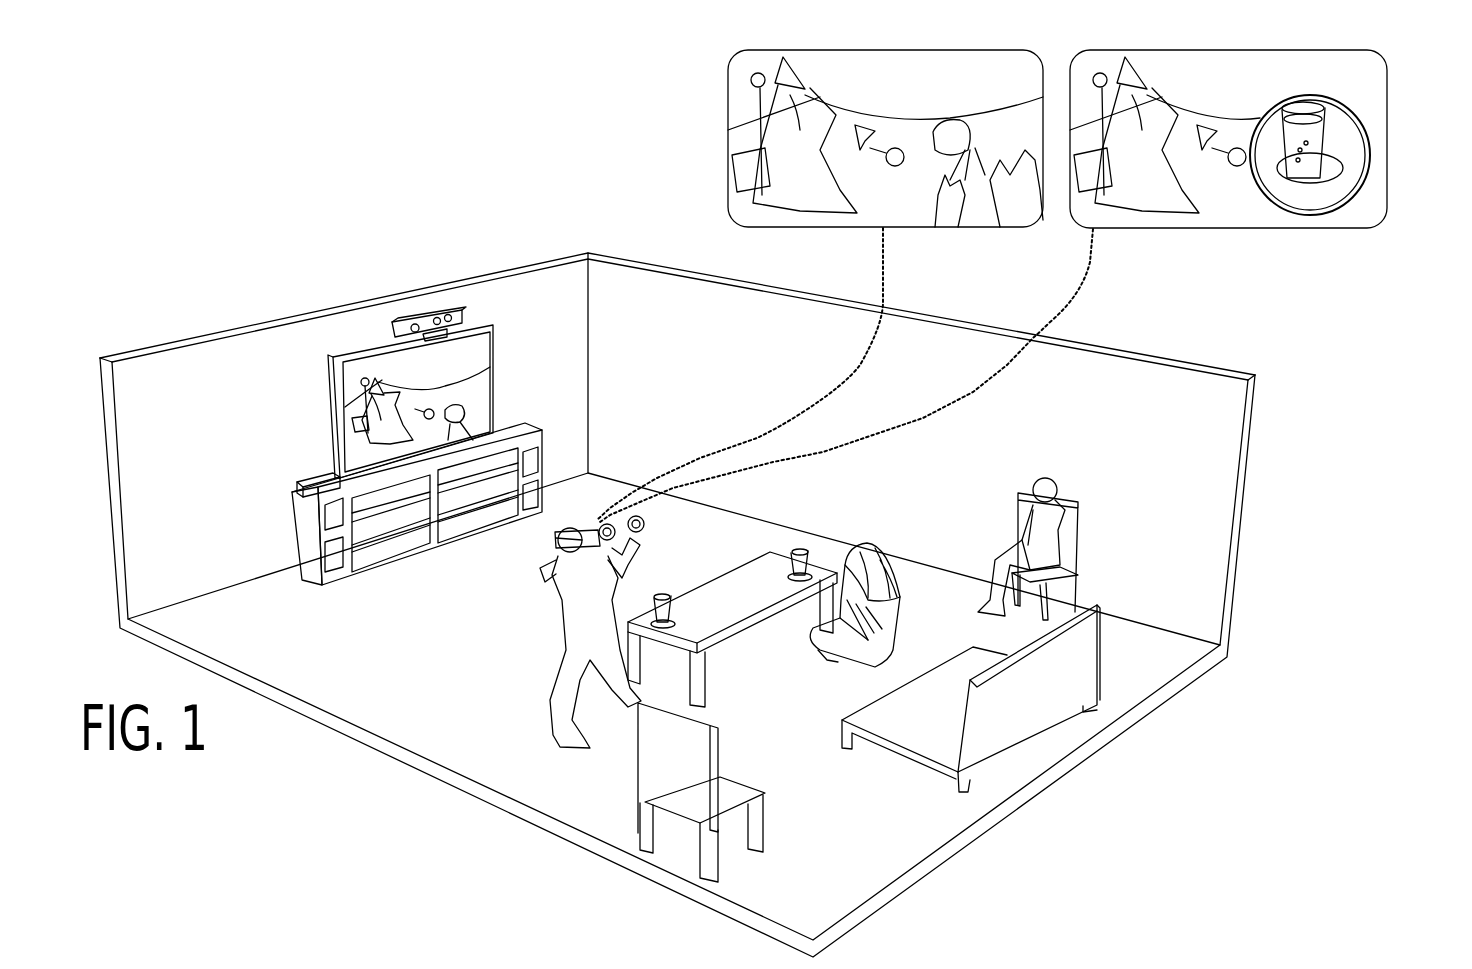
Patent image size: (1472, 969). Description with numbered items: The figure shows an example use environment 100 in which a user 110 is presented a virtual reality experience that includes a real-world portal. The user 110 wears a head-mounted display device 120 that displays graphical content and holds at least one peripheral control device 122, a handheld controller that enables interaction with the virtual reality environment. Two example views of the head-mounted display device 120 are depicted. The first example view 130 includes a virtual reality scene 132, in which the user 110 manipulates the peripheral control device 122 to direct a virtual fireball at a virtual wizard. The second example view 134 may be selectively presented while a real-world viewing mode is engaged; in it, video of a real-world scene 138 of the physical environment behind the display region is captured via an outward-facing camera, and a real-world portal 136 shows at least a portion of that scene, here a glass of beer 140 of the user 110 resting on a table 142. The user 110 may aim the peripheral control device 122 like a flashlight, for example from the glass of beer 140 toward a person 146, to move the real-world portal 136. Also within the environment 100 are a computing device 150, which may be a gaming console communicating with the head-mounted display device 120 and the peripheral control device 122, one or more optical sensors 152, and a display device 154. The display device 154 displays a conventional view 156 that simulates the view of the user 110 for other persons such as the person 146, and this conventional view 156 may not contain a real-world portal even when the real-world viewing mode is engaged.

The use environment 100 is at (342, 792).
The user 110 is at (567, 587).
The head-mounted display (HMD) device 120 is at (578, 524).
The peripheral control device 122 is at (645, 520).
The first example view 130 is at (728, 192).
The virtual reality scene 132 is at (980, 87).
The second example view 134 is at (1383, 177).
The real-world portal 136 is at (1337, 103).
The real-world scene 138 is at (1340, 140).
The glass of beer 140 is at (660, 592).
The table 142 is at (722, 635).
The person 146 is at (877, 540).
The computing device 150 is at (318, 478).
The optical sensor 152 is at (463, 308).
The display device 154 is at (493, 380).
The conventional view 156 is at (468, 371).